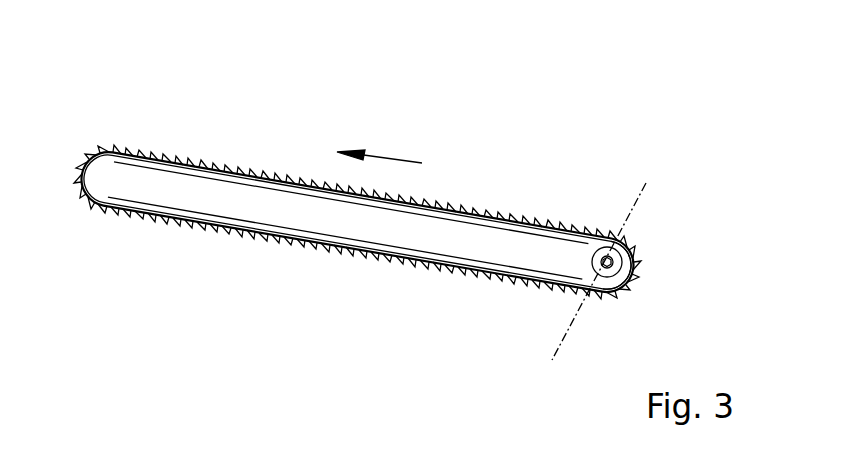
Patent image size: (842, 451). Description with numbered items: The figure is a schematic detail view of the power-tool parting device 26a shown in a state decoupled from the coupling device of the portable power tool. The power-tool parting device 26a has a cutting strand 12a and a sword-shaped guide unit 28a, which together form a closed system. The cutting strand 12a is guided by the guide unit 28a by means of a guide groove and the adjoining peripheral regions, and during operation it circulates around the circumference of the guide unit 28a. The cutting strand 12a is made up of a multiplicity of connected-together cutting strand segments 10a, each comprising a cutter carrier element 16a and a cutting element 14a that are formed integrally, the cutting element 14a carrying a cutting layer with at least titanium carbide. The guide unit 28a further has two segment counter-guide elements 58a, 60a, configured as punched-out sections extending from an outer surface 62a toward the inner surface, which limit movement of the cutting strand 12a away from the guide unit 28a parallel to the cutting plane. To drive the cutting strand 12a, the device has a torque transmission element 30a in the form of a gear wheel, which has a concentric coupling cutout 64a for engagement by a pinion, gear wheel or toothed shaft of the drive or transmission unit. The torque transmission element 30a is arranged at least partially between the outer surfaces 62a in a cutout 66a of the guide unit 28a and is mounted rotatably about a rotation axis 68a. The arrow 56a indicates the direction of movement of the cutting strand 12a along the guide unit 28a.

The cutting strand segment 10a is at (252, 166).
The cutting strand 12a is at (290, 72).
The cutting element 14a is at (248, 163).
The cutter carrier element 16a is at (242, 162).
The power-tool parting device 26a is at (577, 128).
The guide unit 28a is at (200, 210).
The torque transmission element 30a is at (604, 268).
The cutting direction 56a is at (388, 158).
The segment counter-guide element 58a is at (514, 224).
The segment counter-guide element 60a is at (507, 271).
The outer surface 62a is at (399, 230).
The coupling cutout 64a is at (595, 243).
The cutout 66a is at (626, 284).
The rotation axis 68a is at (651, 181).